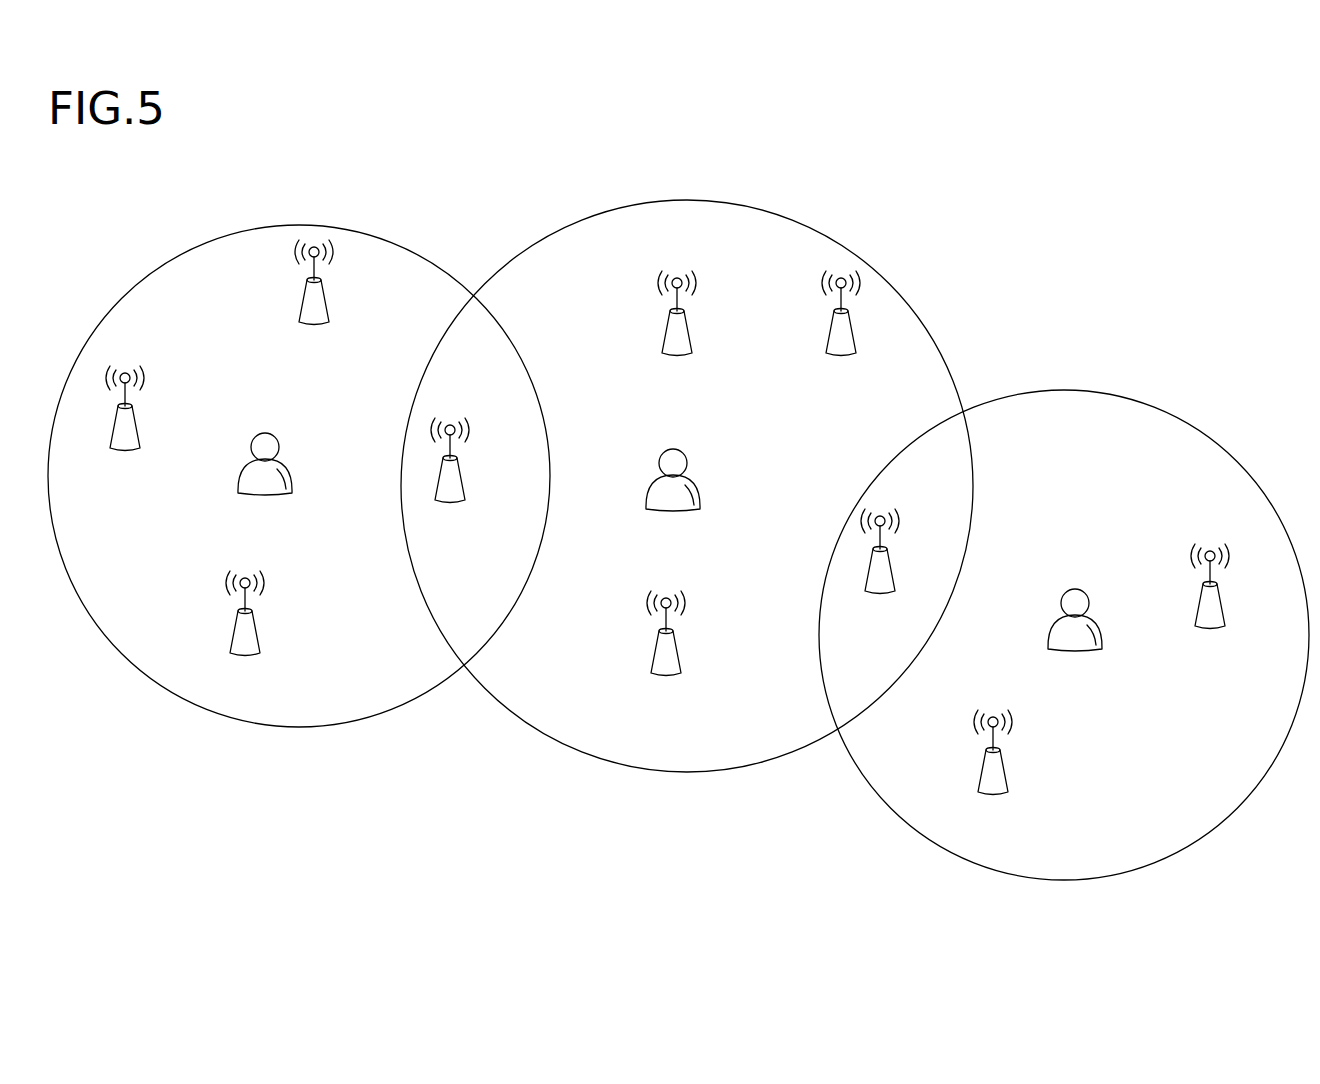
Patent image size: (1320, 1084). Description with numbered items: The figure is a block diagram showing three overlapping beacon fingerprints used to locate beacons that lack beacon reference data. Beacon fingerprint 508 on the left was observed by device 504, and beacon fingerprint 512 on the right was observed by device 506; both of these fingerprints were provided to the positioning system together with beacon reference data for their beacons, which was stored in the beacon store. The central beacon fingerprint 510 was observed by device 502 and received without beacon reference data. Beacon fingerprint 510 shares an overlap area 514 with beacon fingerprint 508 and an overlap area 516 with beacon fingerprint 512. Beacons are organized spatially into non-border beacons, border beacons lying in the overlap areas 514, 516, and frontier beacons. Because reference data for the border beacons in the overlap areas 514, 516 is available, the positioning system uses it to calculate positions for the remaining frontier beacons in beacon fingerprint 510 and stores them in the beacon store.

The device 502 is at (674, 509).
The device 504 is at (266, 493).
The device 506 is at (1076, 649).
The beacon fingerprint 508 is at (298, 226).
The beacon fingerprint 510 is at (686, 200).
The beacon fingerprint 512 is at (1100, 395).
The overlap area 514 is at (480, 345).
The overlap area 516 is at (943, 452).